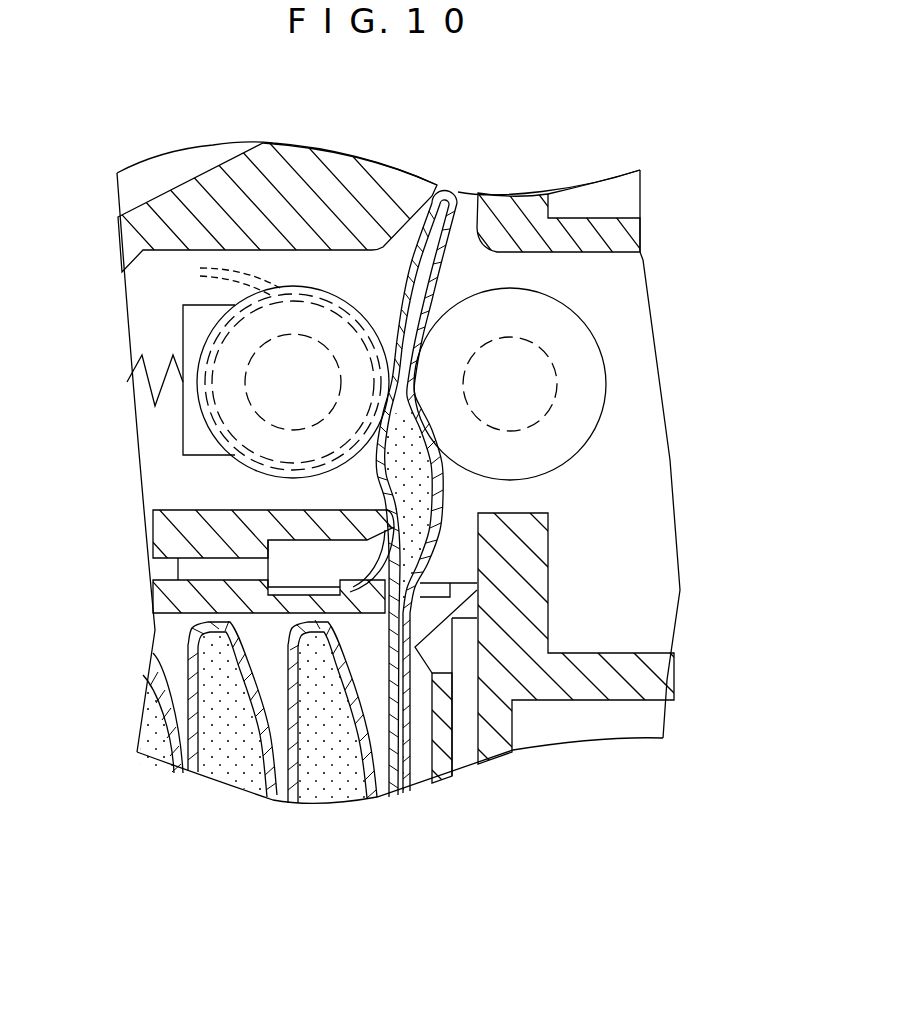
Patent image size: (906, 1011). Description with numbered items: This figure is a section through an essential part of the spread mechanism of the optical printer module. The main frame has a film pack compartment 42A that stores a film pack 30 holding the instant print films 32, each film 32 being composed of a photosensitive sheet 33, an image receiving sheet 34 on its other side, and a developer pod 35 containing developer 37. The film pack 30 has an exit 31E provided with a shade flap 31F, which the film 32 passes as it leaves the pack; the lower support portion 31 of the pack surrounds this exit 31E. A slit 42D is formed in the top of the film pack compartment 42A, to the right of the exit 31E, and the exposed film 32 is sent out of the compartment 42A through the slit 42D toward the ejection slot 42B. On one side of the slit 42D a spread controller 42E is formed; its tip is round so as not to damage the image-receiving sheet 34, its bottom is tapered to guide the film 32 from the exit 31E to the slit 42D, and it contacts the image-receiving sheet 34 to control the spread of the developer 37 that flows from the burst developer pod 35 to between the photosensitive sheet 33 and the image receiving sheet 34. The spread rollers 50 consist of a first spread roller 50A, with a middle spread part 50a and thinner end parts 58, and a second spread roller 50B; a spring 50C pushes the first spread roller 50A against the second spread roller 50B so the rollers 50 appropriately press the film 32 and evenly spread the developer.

The film pack 30 is at (442, 792).
The lower support plate 31 is at (167, 593).
The exit of the film pack 31E is at (370, 596).
The shade flap 31F is at (388, 528).
The instant print film 32 is at (452, 180).
The photosensitive sheet 33 is at (437, 655).
The image receiving sheet 34 is at (360, 645).
The developer pod 35 is at (447, 250).
The developer 37 is at (403, 447).
The film pack compartment 42A is at (210, 562).
The ejection slot 42B is at (477, 197).
The slit 42D is at (457, 543).
The spread controller 42E is at (378, 510).
The spread rollers 50 is at (500, 381).
The first spread roller 50A is at (470, 381).
The second spread roller 50B is at (608, 373).
The spring 50C is at (150, 394).
The spread part 50a is at (282, 287).
The thin parts 58 is at (215, 274).